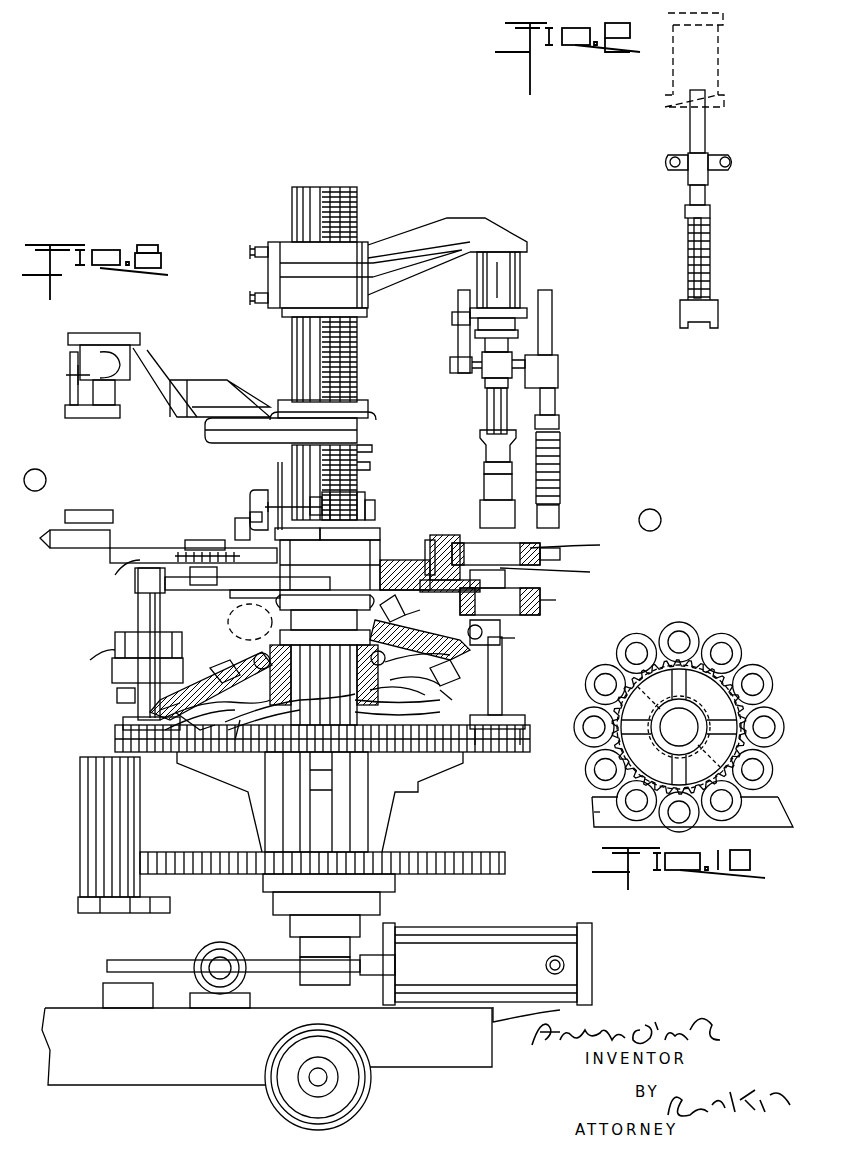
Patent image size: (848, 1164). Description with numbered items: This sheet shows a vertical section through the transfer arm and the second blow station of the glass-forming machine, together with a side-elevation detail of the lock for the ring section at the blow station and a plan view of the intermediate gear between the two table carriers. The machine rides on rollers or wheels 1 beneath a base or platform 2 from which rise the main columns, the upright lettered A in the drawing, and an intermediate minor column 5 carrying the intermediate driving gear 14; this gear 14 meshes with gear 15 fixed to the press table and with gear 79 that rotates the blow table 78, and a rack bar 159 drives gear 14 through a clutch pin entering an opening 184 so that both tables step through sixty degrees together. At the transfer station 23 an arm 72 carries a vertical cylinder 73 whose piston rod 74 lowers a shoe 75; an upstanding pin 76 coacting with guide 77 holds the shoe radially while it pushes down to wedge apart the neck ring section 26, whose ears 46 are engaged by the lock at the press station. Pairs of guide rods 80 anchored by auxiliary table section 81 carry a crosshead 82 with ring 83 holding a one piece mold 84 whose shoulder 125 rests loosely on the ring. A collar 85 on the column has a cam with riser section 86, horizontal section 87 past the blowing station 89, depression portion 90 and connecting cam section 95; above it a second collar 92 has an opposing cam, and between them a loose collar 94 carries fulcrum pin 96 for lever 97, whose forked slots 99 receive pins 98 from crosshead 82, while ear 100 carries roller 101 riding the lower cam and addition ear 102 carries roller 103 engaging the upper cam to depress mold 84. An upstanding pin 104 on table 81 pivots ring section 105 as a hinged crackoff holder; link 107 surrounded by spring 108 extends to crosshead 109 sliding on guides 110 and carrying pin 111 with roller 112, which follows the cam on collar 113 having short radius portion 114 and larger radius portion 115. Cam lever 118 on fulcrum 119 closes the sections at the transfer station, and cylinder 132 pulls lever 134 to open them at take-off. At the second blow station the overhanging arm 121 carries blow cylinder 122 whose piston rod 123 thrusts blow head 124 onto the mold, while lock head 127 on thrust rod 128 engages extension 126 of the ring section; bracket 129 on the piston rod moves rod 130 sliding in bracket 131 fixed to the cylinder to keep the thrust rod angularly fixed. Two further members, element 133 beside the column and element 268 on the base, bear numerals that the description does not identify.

In FIG. 8, the column A is at (357, 192).
In FIG. 8, the rollers or wheels 1 is at (265, 1047).
In FIG. 8, the base or platform 2 is at (70, 995).
In FIG. 10, the intermediate minor column 5 is at (700, 715).
In FIG. 8, the intermediate driving gear 14 is at (140, 815).
In FIG. 10, the intermediate driving gear 14 is at (740, 827).
In FIG. 10, the gear 15 is at (742, 720).
In FIG. 8, the transfer station 23 is at (35, 480).
In FIG. 8, the neck ring section 26 is at (60, 548).
In FIG. 8, the ears 46 is at (110, 540).
In FIG. 8, the arm 72 is at (210, 355).
In FIG. 8, the vertical cylinder 73 is at (140, 340).
In FIG. 8, the piston rod 74 is at (115, 398).
In FIG. 8, the shoe 75 is at (90, 418).
In FIG. 8, the upstanding pin 76 is at (70, 393).
In FIG. 8, the guide 77 is at (66, 375).
In FIG. 8, the blow table 78 is at (418, 782).
In FIG. 8, the gear 79 is at (505, 865).
In FIG. 8, the guide rods 80 is at (138, 615).
In FIG. 8, the auxiliary table section 81 is at (152, 593).
In FIG. 8, the crosshead 82 is at (117, 695).
In FIG. 8, the ring 83 is at (112, 673).
In FIG. 8, the one piece mold 84 is at (115, 645).
In FIG. 8, the collar 85 is at (390, 712).
In FIG. 8, the riser section 86 is at (300, 700).
In FIG. 8, the straight or horizontal section 87 is at (429, 687).
In FIG. 8, the second blowing station 89 is at (650, 520).
In FIG. 8, the depression portion 90 is at (425, 695).
In FIG. 8, the second collar 92 is at (250, 622).
In FIG. 8, the loose collar 94 is at (222, 662).
In FIG. 8, the cam section 95 is at (255, 752).
In FIG. 8, the fulcrum pin 96 is at (215, 715).
In FIG. 8, the lever 97 is at (200, 660).
In FIG. 8, the pins 98 is at (160, 710).
In FIG. 8, the slots 99 is at (123, 727).
In FIG. 8, the ear 100 is at (199, 730).
In FIG. 8, the roller 101 is at (235, 740).
In FIG. 8, the addition ear 102 is at (404, 601).
In FIG. 8, the roller 103 is at (500, 601).
In FIG. 8, the upstanding pin 104 is at (450, 525).
In FIG. 10, the upstanding pin 104 is at (690, 630).
In FIG. 8, the ring section 105 is at (575, 556).
In FIG. 8, the link 107 is at (220, 528).
In FIG. 8, the spring 108 is at (180, 590).
In FIG. 8, the crosshead or slide 109 is at (250, 505).
In FIG. 8, the guides 110 is at (345, 492).
In FIG. 8, the upstanding pin 111 is at (375, 518).
In FIG. 8, the roller 112 is at (340, 560).
In FIG. 8, the collar 113 is at (350, 528).
In FIG. 8, the short radius portion 114 is at (297, 528).
In FIG. 8, the larger radius portion 115 is at (335, 518).
In FIG. 8, the cam lever 118 is at (280, 462).
In FIG. 8, the fulcrum 119 is at (255, 490).
In FIG. 8, the second overhanging arm 121 is at (448, 215).
In FIG. 8, the blow cylinder 122 is at (520, 278).
In FIG. 9, the blow cylinder 122 is at (717, 72).
In FIG. 8, the piston rod 123 is at (505, 410).
In FIG. 8, the blow head 124 is at (560, 478).
In FIG. 8, the shoulder 125 is at (77, 655).
In FIG. 8, the extension 126 is at (583, 545).
In FIG. 8, the lock head 127 is at (560, 522).
In FIG. 9, the lock head 127 is at (718, 312).
In FIG. 8, the thrust rod 128 is at (555, 392).
In FIG. 9, the thrust rod 128 is at (710, 192).
In FIG. 8, the bracket 129 is at (558, 368).
In FIG. 9, the bracket 129 is at (708, 150).
In FIG. 8, the rod 130 is at (446, 354).
In FIG. 8, the bracket 131 is at (445, 331).
In FIG. 8, the cylinder 132 is at (360, 466).
In FIG. 8, the ring 133 is at (372, 447).
In FIG. 8, the lever 134 is at (250, 512).
In FIG. 10, the rack bar 159 is at (598, 827).
In FIG. 8, the opening 184 is at (170, 908).
In FIG. 8, the motor 268 is at (232, 945).